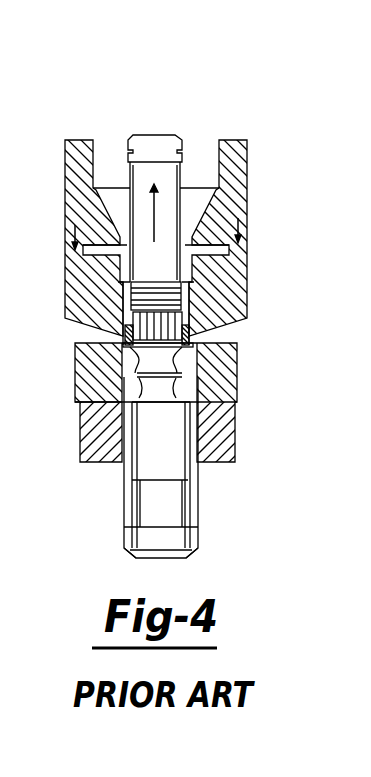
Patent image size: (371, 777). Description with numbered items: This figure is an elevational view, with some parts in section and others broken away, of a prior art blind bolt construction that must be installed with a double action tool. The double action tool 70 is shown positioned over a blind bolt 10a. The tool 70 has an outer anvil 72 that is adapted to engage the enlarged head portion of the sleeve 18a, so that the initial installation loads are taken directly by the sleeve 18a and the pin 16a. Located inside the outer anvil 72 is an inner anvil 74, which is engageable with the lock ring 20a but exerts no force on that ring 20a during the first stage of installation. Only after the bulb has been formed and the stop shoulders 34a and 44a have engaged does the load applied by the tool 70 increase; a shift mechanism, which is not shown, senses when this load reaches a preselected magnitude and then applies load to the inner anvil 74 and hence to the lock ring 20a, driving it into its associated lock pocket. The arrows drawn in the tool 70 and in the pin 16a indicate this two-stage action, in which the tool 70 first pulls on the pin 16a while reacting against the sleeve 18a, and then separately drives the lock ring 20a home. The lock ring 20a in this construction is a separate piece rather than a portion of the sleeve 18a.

The double action tool 70 is at (249, 177).
The inner anvil 74 is at (188, 303).
The outer anvil 72 is at (194, 335).
The lock ring 20a is at (193, 340).
The stop shoulder 34a is at (132, 457).
The blind bolt 10a is at (206, 505).
The sleeve 18a is at (123, 500).
The pin 16a is at (190, 518).
The stop shoulder 44a is at (155, 472).